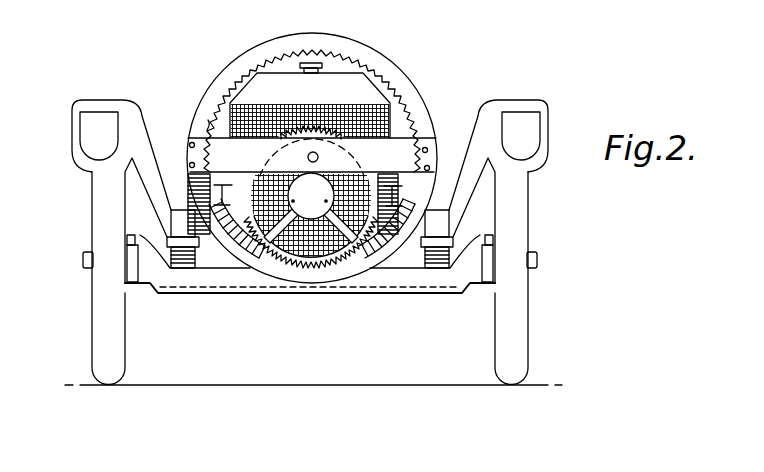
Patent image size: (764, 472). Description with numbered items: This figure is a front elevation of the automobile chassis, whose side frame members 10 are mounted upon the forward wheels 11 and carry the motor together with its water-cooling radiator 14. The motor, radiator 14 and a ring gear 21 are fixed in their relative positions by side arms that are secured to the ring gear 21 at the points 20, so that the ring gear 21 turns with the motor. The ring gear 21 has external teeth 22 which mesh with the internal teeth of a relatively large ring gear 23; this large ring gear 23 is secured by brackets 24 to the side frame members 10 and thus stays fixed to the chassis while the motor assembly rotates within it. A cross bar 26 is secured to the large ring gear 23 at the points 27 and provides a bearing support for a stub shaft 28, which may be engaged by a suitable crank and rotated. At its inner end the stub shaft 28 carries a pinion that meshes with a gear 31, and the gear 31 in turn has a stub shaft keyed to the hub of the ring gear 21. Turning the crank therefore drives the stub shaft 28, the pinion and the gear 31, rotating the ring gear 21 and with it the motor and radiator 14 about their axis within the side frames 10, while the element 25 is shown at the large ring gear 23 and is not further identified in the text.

The side frame members 10 is at (395, 188).
The forward wheels 11 is at (110, 337).
The radiator 14 is at (354, 46).
The securing points 20 is at (248, 175).
The ring gear 21 is at (328, 270).
The external teeth 22 is at (304, 268).
The relatively large ring gear 23 is at (399, 97).
The brackets 24 is at (182, 203).
The gear rim 25 is at (414, 115).
The cross bar 26 is at (210, 137).
The securing points 27 is at (196, 167).
The stub shaft 28 is at (313, 157).
The gear 31 is at (311, 196).